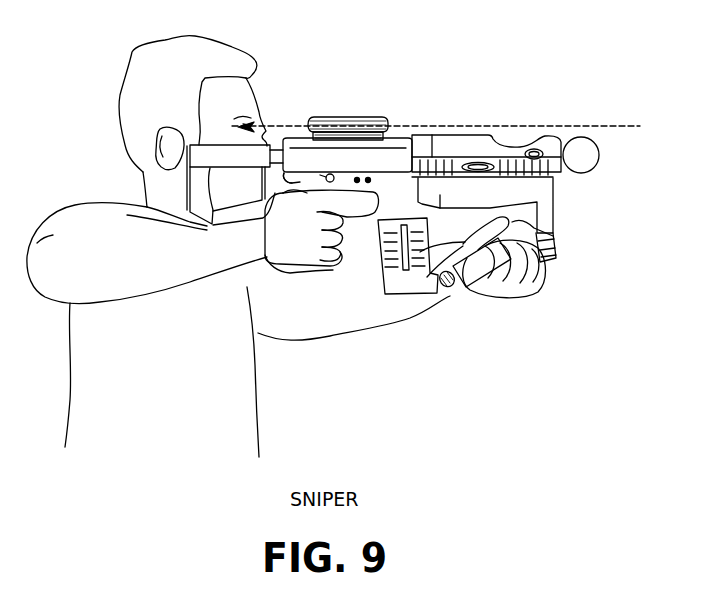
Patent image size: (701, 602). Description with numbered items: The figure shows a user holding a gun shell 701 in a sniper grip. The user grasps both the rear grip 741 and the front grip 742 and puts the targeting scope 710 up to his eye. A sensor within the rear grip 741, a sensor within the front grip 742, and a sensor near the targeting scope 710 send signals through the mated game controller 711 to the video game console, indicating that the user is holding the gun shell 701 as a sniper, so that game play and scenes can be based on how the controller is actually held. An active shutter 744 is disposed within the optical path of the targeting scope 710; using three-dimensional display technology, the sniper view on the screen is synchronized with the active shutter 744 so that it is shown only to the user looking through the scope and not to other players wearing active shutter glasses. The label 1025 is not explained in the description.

The gun shell 701 is at (390, 298).
The targeting scope 710 is at (370, 117).
The mated game controller 711 is at (518, 137).
The rear grip 741 is at (290, 272).
The front grip 742 is at (472, 296).
The active shutter 744 is at (301, 117).
The sheet reference 1025 is at (19, 590).